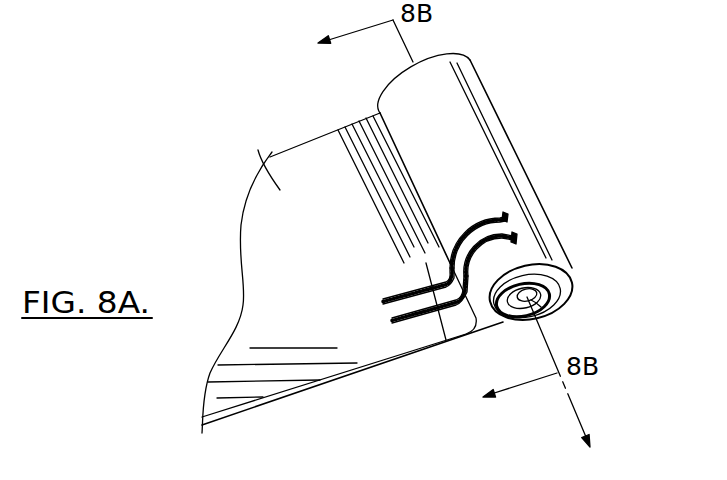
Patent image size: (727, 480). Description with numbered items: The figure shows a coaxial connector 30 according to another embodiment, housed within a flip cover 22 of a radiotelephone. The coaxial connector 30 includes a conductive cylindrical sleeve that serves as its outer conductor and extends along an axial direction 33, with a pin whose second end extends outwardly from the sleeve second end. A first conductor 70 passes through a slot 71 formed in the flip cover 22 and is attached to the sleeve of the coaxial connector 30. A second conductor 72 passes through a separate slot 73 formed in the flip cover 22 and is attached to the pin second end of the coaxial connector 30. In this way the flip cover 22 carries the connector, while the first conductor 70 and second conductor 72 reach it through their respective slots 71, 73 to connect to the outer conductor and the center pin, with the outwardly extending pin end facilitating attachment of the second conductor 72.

The flip cover 22 is at (262, 163).
The coaxial connector 30 is at (596, 318).
The axial direction 33 is at (576, 410).
The first conductor 70 is at (412, 322).
The slot 71 is at (508, 236).
The second conductor 72 is at (410, 288).
The slot 73 is at (488, 223).